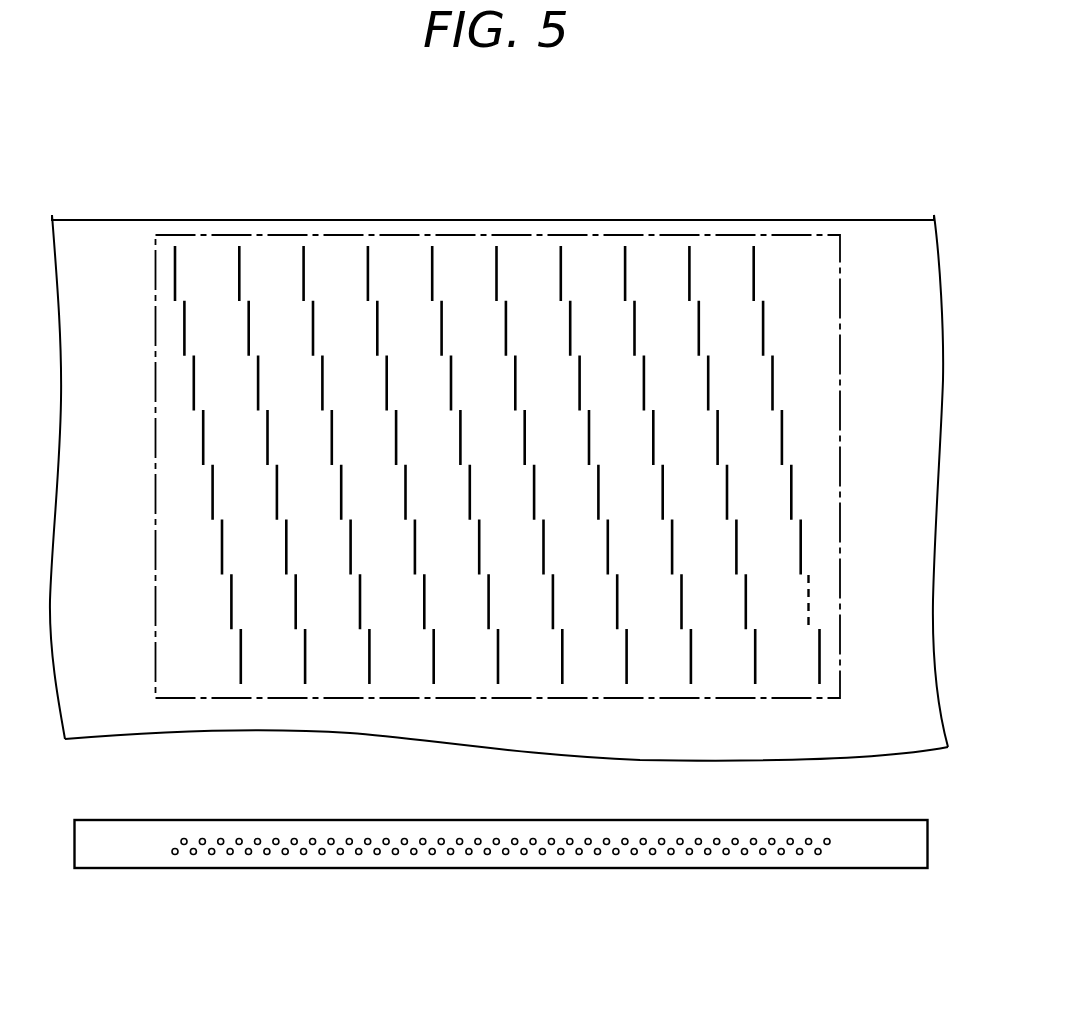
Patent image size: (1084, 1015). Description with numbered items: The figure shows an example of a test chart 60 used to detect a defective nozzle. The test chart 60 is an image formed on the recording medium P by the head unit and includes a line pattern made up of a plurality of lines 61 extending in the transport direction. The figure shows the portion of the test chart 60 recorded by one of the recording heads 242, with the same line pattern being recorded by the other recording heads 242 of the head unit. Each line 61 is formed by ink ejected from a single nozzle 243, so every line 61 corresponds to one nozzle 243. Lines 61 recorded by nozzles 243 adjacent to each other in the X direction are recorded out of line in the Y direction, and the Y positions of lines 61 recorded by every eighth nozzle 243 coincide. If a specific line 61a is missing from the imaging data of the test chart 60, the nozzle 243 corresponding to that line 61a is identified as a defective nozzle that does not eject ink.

The recording medium P is at (693, 220).
The test chart 60 is at (491, 236).
The lines 61 is at (305, 264).
The line 61a is at (810, 599).
The recording head 242 is at (410, 870).
The nozzle 243 is at (515, 845).